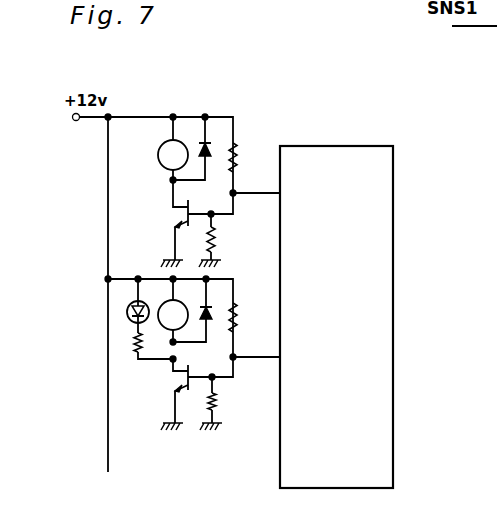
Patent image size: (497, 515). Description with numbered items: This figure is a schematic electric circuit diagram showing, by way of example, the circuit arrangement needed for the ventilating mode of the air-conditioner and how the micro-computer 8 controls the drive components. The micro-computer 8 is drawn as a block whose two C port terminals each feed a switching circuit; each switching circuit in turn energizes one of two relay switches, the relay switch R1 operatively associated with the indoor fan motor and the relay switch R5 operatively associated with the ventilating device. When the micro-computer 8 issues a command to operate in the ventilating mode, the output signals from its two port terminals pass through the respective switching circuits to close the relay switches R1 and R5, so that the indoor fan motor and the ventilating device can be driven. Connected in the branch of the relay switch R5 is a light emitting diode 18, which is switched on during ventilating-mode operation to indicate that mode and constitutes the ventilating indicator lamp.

The micro-computer 8 is at (393, 259).
The light emitting diode 18 is at (129, 319).
The relay switch R1 is at (160, 152).
The relay switch R5 is at (184, 301).